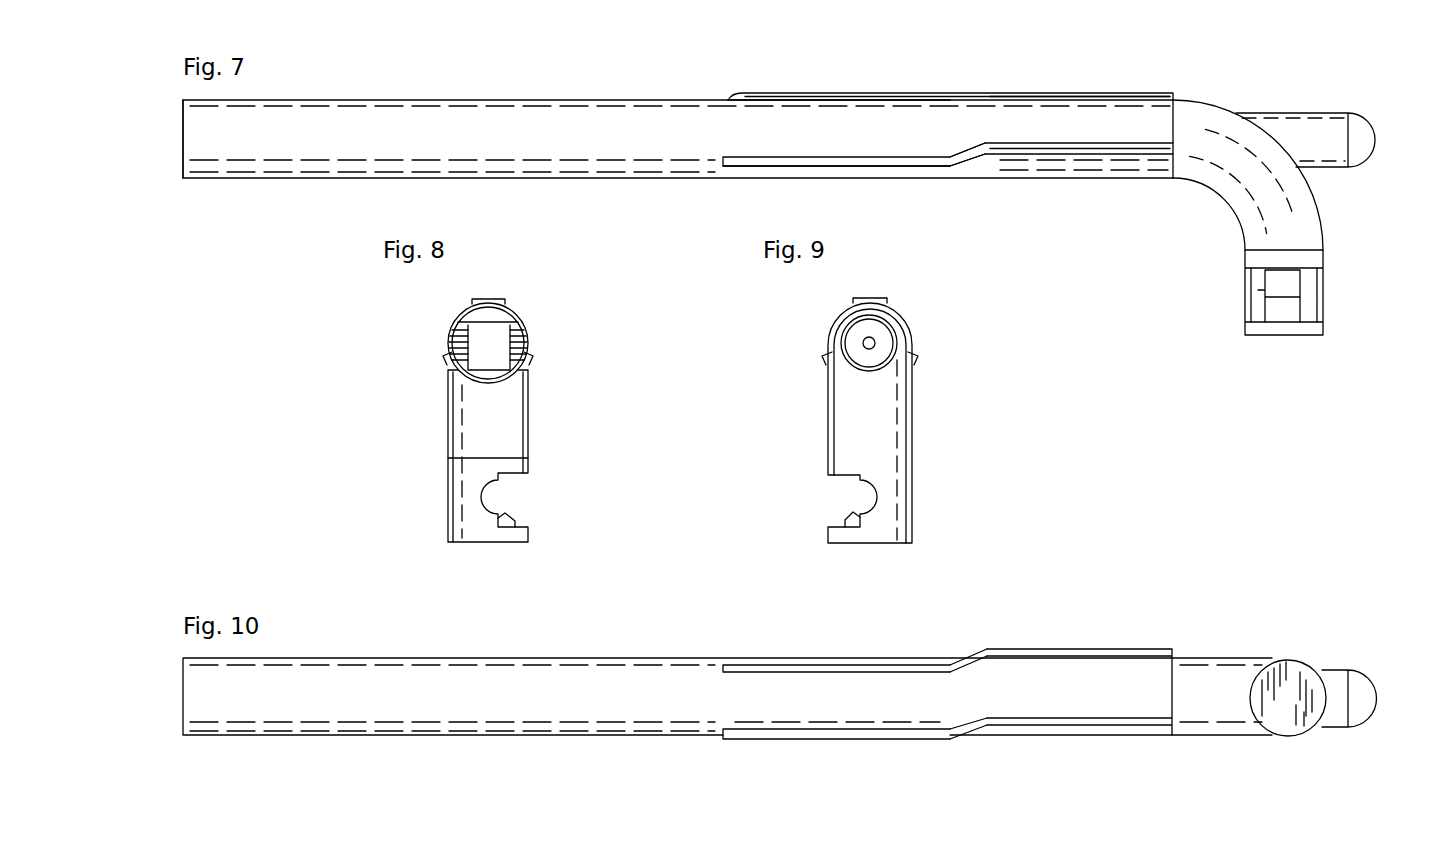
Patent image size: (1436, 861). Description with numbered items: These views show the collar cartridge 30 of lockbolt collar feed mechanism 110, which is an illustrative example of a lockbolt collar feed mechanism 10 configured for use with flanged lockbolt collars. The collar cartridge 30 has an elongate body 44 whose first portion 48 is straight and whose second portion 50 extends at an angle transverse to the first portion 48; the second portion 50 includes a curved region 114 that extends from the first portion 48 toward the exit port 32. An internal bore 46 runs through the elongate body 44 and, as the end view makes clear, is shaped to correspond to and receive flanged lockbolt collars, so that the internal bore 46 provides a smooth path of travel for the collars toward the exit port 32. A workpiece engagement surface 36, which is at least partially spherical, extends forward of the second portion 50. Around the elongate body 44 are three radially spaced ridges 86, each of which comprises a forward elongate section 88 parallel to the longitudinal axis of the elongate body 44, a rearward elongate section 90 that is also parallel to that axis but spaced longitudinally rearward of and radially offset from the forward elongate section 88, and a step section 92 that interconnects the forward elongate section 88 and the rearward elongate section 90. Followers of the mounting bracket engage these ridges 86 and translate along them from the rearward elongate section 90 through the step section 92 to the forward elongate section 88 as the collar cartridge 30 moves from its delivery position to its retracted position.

In FIG. 7, the lockbolt collar feed mechanism 10 is at (1261, 22).
In FIG. 8, the lockbolt collar feed mechanism 10 is at (589, 290).
In FIG. 9, the lockbolt collar feed mechanism 10 is at (985, 288).
In FIG. 10, the lockbolt collar feed mechanism 10 is at (1297, 583).
In FIG. 7, the collar cartridge 30 is at (584, 86).
In FIG. 8, the collar cartridge 30 is at (547, 408).
In FIG. 9, the collar cartridge 30 is at (928, 408).
In FIG. 10, the collar cartridge 30 is at (584, 644).
In FIG. 7, the exit port 32 is at (1313, 296).
In FIG. 8, the exit port 32 is at (514, 520).
In FIG. 9, the exit port 32 is at (850, 518).
In FIG. 7, the workpiece engagement surface 36 is at (1369, 140).
In FIG. 9, the workpiece engagement surface 36 is at (876, 345).
In FIG. 10, the workpiece engagement surface 36 is at (1375, 698).
In FIG. 7, the elongate body 44 is at (494, 99).
In FIG. 8, the elongate body 44 is at (444, 432).
In FIG. 9, the elongate body 44 is at (825, 432).
In FIG. 10, the elongate body 44 is at (494, 657).
In FIG. 8, the internal bore 46 is at (497, 350).
In FIG. 7, the first portion 48 is at (387, 100).
In FIG. 8, the first portion 48 is at (452, 333).
In FIG. 10, the first portion 48 is at (387, 658).
In FIG. 7, the second portion 50 is at (1327, 262).
In FIG. 8, the second portion 50 is at (531, 442).
In FIG. 9, the second portion 50 is at (912, 478).
In FIG. 10, the second portion 50 is at (1293, 661).
In FIG. 7, the ridge 86 is at (1048, 140).
In FIG. 8, the ridge 86 is at (486, 300).
In FIG. 9, the ridge 86 is at (870, 331).
In FIG. 10, the ridge 86 is at (1062, 648).
In FIG. 7, the forward elongate section 88 is at (1148, 98).
In FIG. 10, the forward elongate section 88 is at (1146, 650).
In FIG. 7, the rearward elongate section 90 is at (768, 97).
In FIG. 10, the rearward elongate section 90 is at (768, 668).
In FIG. 7, the step section 92 is at (970, 92).
In FIG. 10, the step section 92 is at (966, 665).
In FIG. 7, the lockbolt collar feed mechanism 110 is at (1188, 47).
In FIG. 8, the lockbolt collar feed mechanism 110 is at (548, 304).
In FIG. 9, the lockbolt collar feed mechanism 110 is at (945, 304).
In FIG. 10, the lockbolt collar feed mechanism 110 is at (1225, 605).
In FIG. 7, the curved region 114 is at (1318, 198).
In FIG. 9, the curved region 114 is at (912, 450).